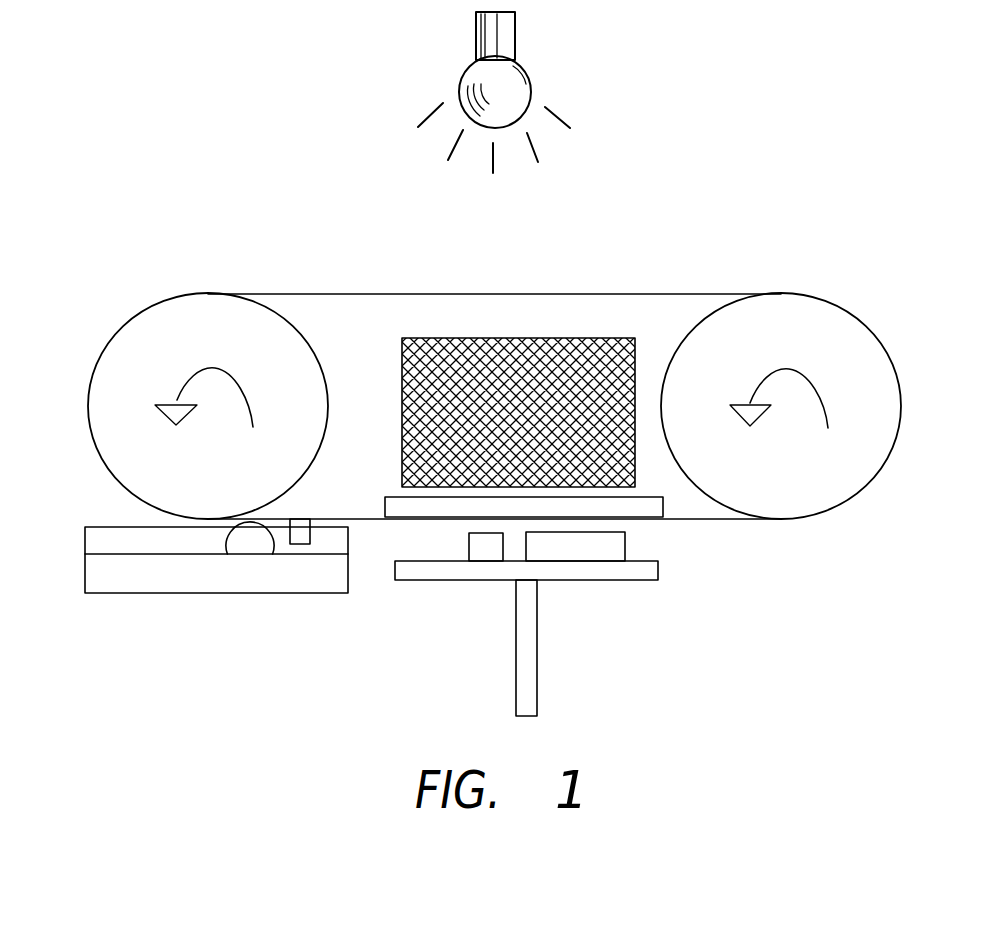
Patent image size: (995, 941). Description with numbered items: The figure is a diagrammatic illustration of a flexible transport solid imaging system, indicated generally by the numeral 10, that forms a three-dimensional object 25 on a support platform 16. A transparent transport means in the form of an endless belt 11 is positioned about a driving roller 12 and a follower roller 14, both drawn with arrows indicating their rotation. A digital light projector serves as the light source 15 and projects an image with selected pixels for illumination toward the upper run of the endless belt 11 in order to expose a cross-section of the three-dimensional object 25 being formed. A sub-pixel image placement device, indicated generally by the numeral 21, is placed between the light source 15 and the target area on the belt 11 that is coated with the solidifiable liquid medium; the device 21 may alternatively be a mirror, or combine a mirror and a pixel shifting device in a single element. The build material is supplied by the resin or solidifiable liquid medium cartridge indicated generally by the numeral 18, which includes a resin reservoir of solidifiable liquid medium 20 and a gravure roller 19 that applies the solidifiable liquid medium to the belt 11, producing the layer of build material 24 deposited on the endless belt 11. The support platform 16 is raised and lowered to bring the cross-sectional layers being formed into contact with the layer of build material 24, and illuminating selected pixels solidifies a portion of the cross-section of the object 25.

The flexible transport imaging system 10 is at (494, 370).
The endless belt 11 is at (308, 294).
The driving roller 12 is at (317, 353).
The follower roller 14 is at (680, 342).
The light source 15 is at (532, 72).
The support platform 16 is at (580, 624).
The solidifiable liquid medium cartridge 18 is at (189, 595).
The gravure roller 19 is at (235, 547).
The resin reservoir of solidifiable liquid medium 20 is at (100, 582).
The sub-pixel image placement device 21 is at (565, 338).
The layer of build material 24 is at (765, 519).
The three-dimensional object 25 is at (625, 545).